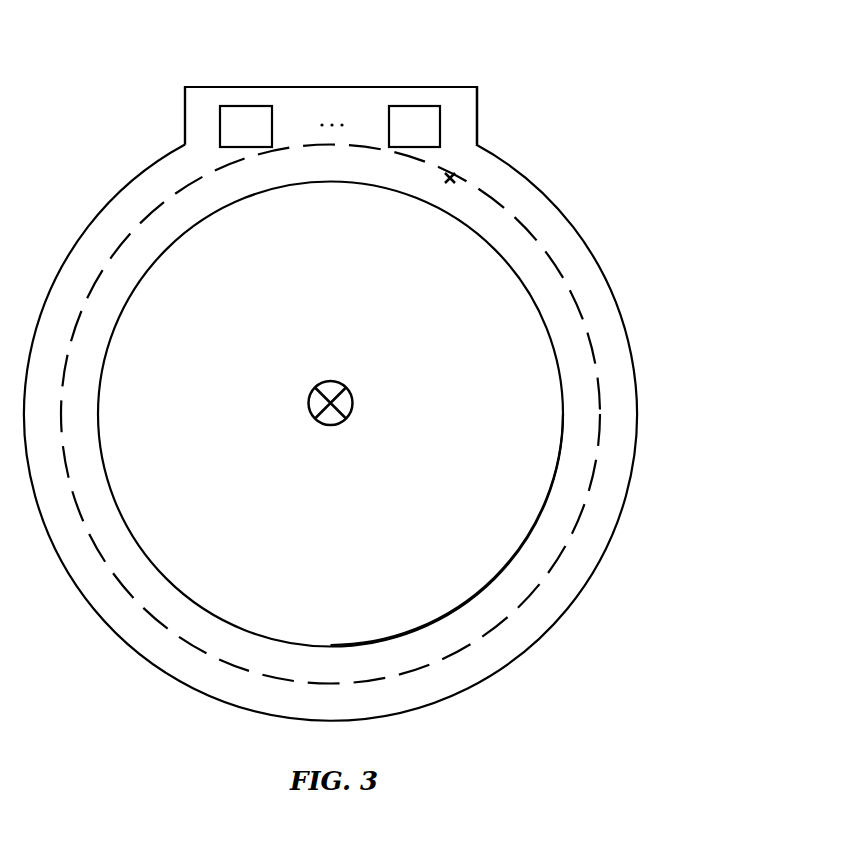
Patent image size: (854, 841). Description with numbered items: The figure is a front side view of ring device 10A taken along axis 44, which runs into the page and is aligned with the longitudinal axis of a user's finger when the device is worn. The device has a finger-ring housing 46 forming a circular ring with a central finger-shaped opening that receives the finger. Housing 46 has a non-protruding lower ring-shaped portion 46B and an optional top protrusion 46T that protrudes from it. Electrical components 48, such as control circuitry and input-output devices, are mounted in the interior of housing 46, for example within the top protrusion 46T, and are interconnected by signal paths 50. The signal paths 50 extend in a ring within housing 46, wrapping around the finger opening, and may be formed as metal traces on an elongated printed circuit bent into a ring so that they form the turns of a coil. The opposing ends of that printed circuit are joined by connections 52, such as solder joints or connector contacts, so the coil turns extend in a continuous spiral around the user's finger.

The device 10A is at (520, 70).
The axis 44 is at (353, 403).
The finger-ring housing 46 is at (637, 385).
The top protrusion 46T is at (173, 113).
The lower ring-shaped portion 46B is at (490, 543).
The electrical components 48 is at (413, 115).
The signal paths 50 is at (112, 258).
The connections 52 is at (452, 172).